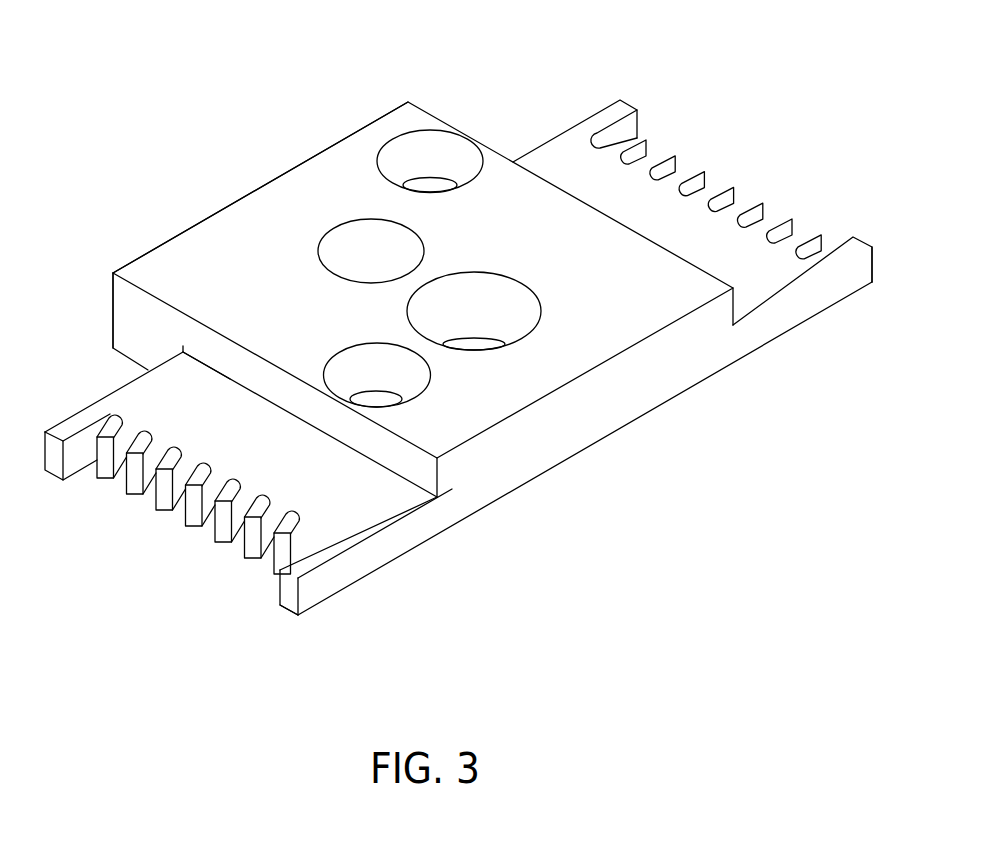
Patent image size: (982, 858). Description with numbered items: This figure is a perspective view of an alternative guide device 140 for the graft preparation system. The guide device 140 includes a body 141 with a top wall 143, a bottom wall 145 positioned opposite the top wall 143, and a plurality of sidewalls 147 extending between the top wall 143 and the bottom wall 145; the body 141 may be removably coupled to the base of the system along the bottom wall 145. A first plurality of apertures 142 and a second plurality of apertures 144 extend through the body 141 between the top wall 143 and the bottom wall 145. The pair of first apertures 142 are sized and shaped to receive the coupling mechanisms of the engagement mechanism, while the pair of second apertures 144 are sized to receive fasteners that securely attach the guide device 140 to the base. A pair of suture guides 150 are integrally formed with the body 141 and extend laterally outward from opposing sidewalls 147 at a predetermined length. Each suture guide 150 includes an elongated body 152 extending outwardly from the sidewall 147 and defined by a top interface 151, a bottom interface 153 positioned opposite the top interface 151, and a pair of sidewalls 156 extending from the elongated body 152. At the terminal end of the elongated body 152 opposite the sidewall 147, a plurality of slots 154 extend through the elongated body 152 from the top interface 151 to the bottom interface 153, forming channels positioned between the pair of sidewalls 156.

The guide device 140 is at (203, 118).
The body 141 is at (612, 315).
The first plurality of apertures 142 is at (350, 234).
The top wall 143 is at (318, 160).
The second plurality of apertures 144 is at (442, 152).
The bottom wall 145 is at (616, 432).
The sidewall 147 is at (117, 307).
The suture guide 150 is at (772, 104).
The top interface 151 is at (190, 372).
The elongated body 152 is at (632, 192).
The bottom interface 153 is at (786, 342).
The slots 154 is at (720, 190).
The sidewalls 156 is at (466, 355).